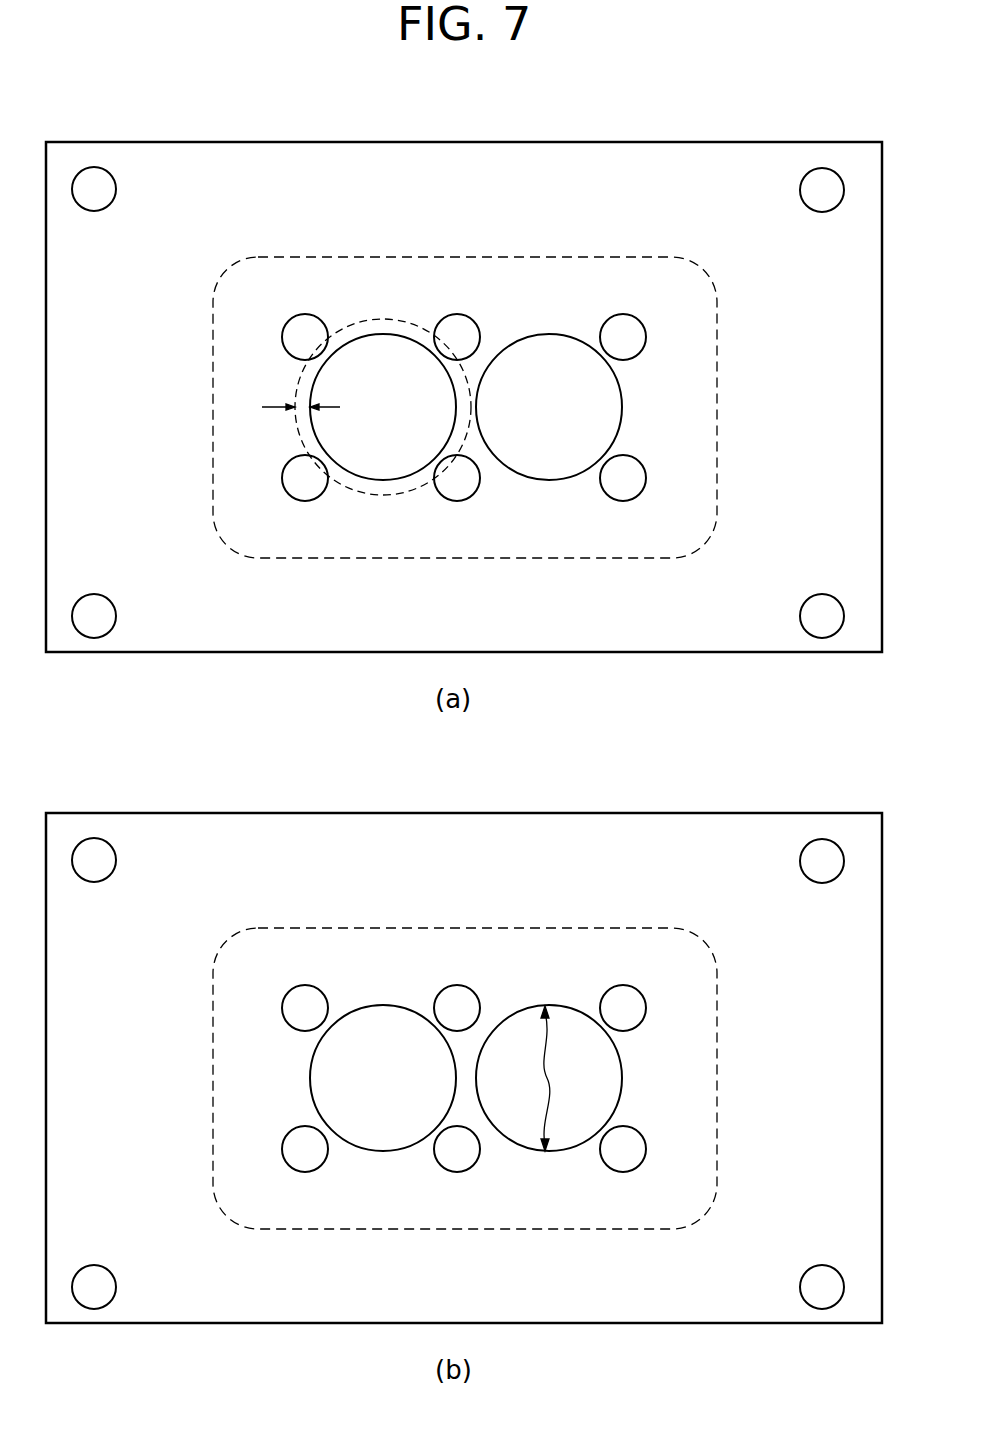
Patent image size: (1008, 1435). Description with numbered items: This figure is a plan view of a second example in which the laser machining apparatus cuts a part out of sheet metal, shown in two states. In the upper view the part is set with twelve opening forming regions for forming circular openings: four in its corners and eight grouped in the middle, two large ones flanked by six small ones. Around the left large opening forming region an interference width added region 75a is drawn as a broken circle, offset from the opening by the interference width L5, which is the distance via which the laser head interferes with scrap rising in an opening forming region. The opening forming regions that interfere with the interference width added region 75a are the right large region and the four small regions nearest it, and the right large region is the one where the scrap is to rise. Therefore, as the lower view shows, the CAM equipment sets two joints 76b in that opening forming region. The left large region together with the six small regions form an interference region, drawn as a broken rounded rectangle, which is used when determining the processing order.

The interference width added region 75a is at (385, 319).
The joint 76b is at (548, 1078).
The interference width L5 is at (314, 407).